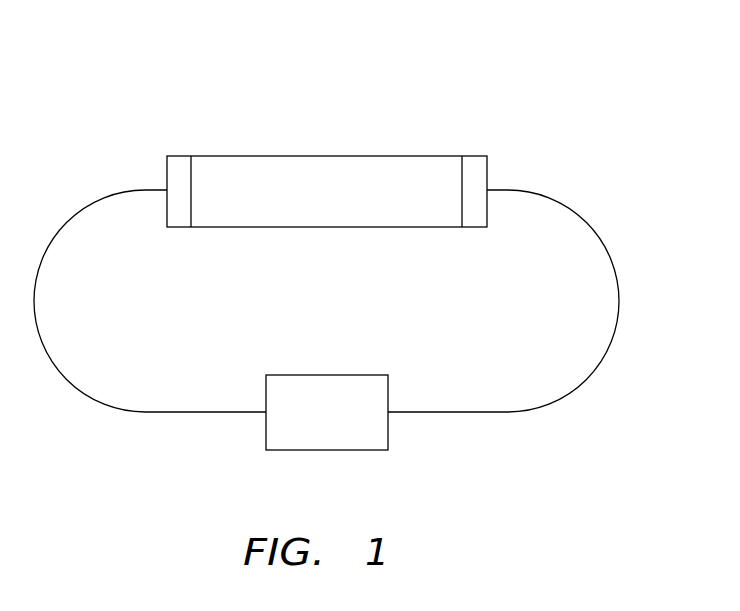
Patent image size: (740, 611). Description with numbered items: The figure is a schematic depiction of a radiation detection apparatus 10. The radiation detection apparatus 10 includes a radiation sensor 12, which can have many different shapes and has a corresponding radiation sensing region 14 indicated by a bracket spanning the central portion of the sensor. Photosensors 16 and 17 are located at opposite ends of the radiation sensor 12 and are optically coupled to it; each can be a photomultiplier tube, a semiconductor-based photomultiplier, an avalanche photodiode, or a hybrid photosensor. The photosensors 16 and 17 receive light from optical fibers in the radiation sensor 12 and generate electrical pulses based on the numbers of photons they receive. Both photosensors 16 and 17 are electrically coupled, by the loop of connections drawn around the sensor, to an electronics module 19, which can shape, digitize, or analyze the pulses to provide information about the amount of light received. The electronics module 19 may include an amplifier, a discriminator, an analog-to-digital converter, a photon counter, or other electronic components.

The radiation detection apparatus 10 is at (580, 61).
The radiation sensor 12 is at (340, 204).
The radiation sensing region 14 is at (461, 147).
The photosensor 16 is at (172, 217).
The photosensor 17 is at (472, 217).
The electronics module 19 is at (341, 426).